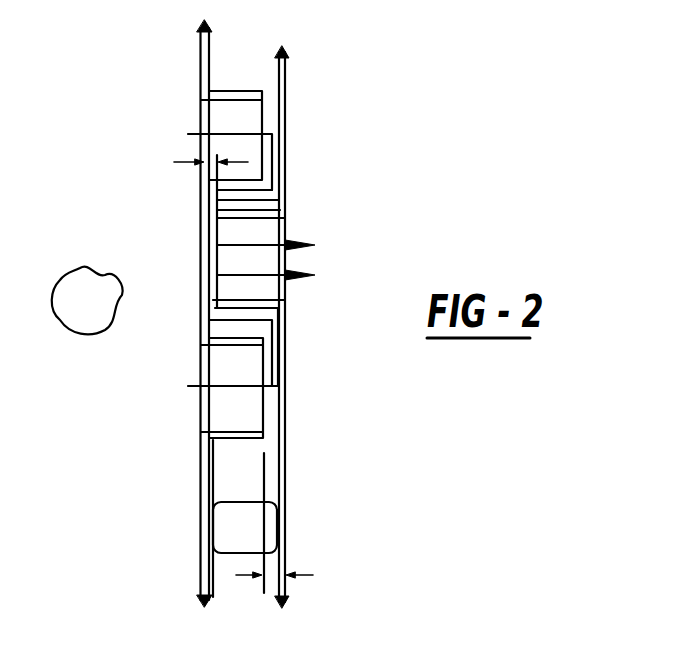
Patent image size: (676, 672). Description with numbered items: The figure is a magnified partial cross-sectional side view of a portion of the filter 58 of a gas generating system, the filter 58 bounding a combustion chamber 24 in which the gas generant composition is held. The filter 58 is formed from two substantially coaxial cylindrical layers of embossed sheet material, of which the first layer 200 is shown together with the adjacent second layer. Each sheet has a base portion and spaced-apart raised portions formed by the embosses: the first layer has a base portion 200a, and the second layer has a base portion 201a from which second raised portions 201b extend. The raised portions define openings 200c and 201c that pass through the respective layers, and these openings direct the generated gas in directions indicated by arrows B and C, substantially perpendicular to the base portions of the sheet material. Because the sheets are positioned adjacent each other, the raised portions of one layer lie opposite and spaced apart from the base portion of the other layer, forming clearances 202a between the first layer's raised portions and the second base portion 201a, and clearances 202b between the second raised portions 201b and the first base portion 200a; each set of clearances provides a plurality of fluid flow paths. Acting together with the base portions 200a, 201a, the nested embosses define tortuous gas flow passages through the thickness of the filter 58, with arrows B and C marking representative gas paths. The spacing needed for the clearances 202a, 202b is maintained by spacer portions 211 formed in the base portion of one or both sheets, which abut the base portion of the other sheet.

The combustion chamber 24 is at (87, 301).
The filter 58 is at (272, 470).
The first layer 200 is at (203, 205).
The base portion of first layer 200a is at (200, 455).
The openings of first layer 200c is at (247, 413).
The base portion of second layer 201a is at (286, 108).
The second raised portions 201b is at (230, 222).
The openings of second layer 201c is at (237, 258).
The clearances 202a is at (296, 578).
The clearances 202b is at (185, 156).
The spacer portions 211 is at (247, 529).
The gas flow direction arrow B is at (200, 131).
The gas flow direction arrow C is at (200, 402).